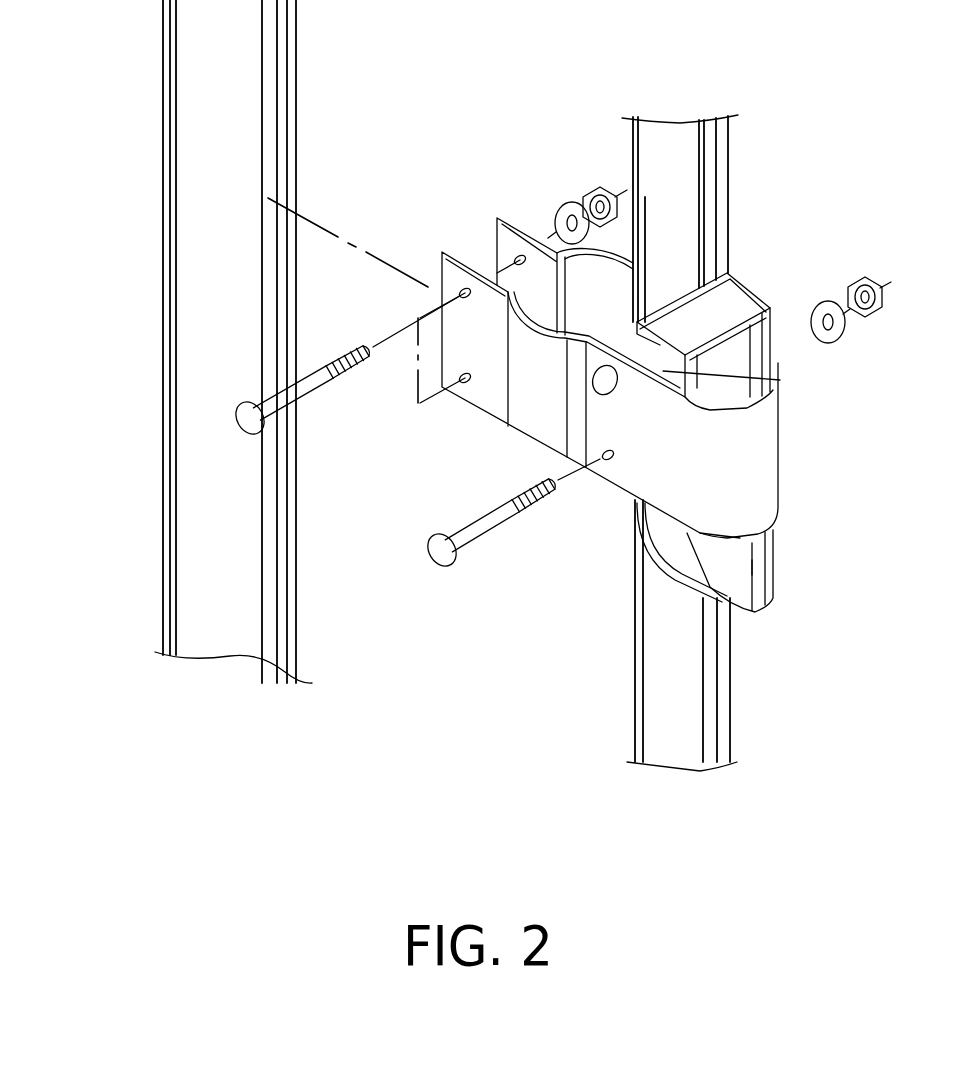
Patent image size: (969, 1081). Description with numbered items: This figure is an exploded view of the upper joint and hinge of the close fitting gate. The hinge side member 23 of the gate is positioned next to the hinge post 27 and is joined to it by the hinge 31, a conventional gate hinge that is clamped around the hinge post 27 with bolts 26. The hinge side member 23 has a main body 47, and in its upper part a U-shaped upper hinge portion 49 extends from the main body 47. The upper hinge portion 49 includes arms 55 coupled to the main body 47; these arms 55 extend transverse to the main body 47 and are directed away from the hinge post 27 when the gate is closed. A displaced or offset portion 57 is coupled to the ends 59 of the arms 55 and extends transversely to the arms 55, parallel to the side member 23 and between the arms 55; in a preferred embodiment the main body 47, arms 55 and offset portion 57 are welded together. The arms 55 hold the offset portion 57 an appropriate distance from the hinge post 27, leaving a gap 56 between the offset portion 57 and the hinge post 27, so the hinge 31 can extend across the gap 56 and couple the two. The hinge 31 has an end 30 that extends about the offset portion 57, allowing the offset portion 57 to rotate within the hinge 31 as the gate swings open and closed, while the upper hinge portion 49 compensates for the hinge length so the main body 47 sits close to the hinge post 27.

The hinge side member 23 is at (728, 143).
The bolts 26 is at (322, 377).
The hinge post 27 is at (200, 313).
The end of hinge 30 is at (657, 378).
The hinge 31 is at (765, 443).
The main body 47 is at (668, 148).
The upper hinge portion 49 is at (757, 570).
The arms 55 is at (732, 282).
The gap 56 is at (780, 380).
The offset portion 57 is at (755, 547).
The ends of arms 59 is at (775, 357).